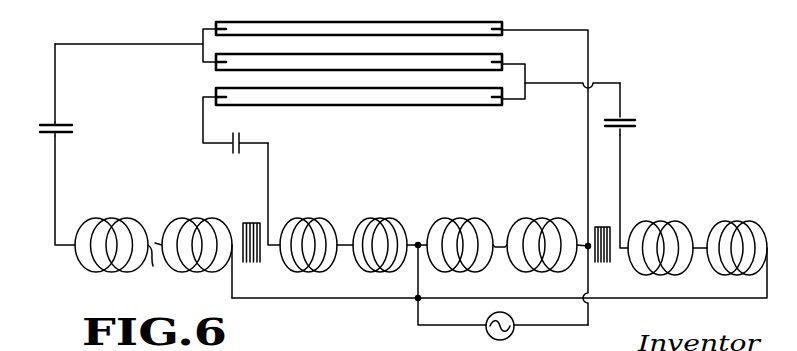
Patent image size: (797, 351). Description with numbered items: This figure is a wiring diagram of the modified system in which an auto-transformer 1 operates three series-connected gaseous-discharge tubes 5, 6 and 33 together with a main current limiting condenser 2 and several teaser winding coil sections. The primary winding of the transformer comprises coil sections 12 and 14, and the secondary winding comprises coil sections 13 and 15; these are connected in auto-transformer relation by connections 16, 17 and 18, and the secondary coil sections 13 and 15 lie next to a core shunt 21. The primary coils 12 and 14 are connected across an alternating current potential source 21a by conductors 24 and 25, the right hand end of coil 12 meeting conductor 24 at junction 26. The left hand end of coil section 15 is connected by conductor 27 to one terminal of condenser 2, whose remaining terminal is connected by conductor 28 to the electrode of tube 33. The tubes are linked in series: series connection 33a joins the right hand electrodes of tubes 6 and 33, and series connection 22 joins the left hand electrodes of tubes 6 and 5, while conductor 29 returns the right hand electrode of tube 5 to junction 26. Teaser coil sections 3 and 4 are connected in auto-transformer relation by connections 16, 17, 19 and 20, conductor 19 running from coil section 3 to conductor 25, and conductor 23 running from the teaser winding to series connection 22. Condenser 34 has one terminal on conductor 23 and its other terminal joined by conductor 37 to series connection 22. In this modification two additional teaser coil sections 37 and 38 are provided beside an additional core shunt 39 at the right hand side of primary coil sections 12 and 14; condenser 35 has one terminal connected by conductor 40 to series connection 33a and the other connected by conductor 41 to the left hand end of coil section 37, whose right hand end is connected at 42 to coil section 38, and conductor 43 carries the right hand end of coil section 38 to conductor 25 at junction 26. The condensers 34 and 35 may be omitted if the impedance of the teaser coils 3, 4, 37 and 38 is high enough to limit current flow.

The auto-transformer 1 is at (352, 211).
The main current limiting condenser 2 is at (250, 159).
The teaser coil section 3 is at (192, 218).
The teaser coil section 4 is at (110, 220).
The gaseous-discharge tube 5 is at (345, 27).
The gaseous-discharge tube 6 is at (337, 62).
The primary coil section 12 is at (535, 222).
The secondary coil section 13 is at (383, 222).
The primary coil section 14 is at (458, 222).
The secondary coil section 15 is at (307, 217).
The connection 16 is at (496, 250).
The connection 17 is at (417, 225).
The connection 18 is at (345, 250).
The conductor 19 is at (417, 280).
The connection 20 is at (153, 269).
The core shunt 21 is at (248, 223).
The alternating current potential source 21a is at (508, 337).
The series connection 22 is at (200, 37).
The conductor 23 is at (57, 182).
The conductor 24 is at (588, 315).
The conductor 25 is at (417, 317).
The junction 26 is at (549, 224).
The conductor 27 is at (270, 170).
The conductor 28 is at (203, 147).
The conductor 29 is at (592, 60).
The third tube 33 is at (333, 97).
The series connection 33a is at (518, 66).
The condenser 34 is at (72, 131).
The condenser 35 is at (621, 127).
The teaser winding coil section 37 is at (57, 80).
The teaser winding coil section 38 is at (733, 222).
The core shunt 39 is at (598, 227).
The conductor 40 is at (550, 82).
The conductor 41 is at (622, 172).
The connection 42 is at (698, 246).
The conductor 43 is at (700, 300).